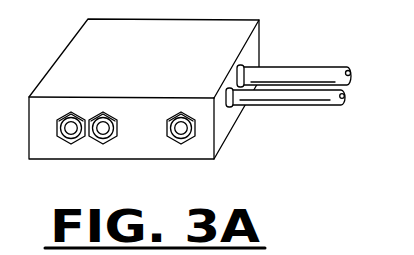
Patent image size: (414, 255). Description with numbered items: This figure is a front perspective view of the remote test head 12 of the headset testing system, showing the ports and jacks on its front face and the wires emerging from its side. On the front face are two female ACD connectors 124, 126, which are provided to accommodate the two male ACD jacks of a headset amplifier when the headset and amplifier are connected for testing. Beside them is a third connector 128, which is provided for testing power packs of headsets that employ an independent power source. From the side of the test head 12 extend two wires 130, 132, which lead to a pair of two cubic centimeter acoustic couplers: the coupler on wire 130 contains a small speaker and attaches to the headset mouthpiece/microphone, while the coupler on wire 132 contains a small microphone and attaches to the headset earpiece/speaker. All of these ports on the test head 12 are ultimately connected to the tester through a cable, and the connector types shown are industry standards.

The remote test head 12 is at (157, 63).
The female ACD connector 124 is at (66, 136).
The female ACD connector 126 is at (107, 136).
The third connector 128 is at (184, 136).
The wire 130 is at (307, 73).
The wire 132 is at (280, 97).